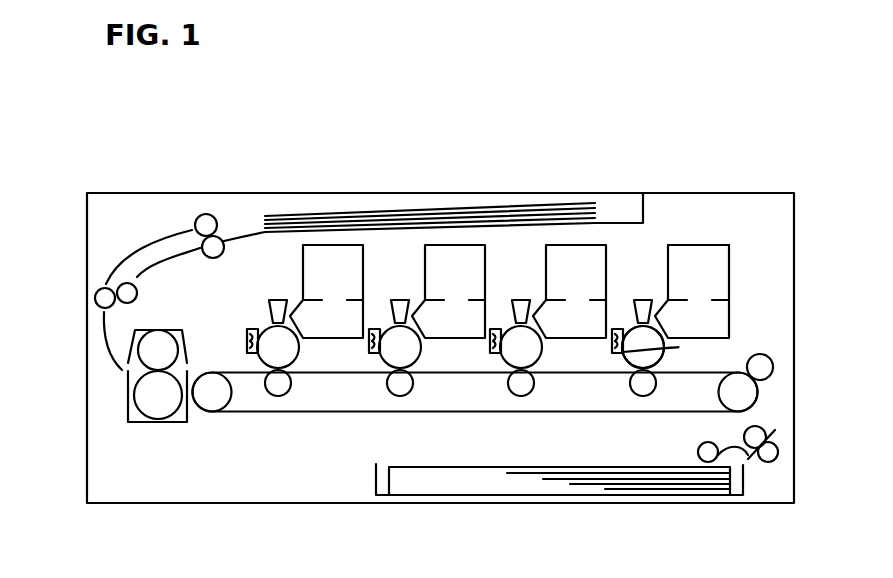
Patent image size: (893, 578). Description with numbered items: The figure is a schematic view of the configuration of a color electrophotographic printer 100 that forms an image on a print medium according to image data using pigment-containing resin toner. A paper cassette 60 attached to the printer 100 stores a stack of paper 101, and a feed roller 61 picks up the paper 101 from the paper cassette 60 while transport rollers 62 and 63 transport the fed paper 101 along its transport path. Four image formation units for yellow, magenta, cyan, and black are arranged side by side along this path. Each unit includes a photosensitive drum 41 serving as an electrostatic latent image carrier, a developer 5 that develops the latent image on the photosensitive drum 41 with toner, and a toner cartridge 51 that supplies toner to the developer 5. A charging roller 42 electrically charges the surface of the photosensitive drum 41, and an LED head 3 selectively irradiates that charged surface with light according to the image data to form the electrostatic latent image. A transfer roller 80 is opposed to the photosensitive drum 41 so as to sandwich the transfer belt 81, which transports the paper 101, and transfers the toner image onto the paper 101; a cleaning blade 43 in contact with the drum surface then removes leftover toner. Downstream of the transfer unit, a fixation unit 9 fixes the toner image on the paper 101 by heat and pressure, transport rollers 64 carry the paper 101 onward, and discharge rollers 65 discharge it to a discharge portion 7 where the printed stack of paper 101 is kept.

The printer 100 is at (767, 193).
The discharge portion 7 is at (402, 216).
The discharge rollers 65 is at (205, 214).
The transport rollers 64 is at (95, 298).
The fixation unit 9 is at (128, 405).
The developer 5 is at (729, 286).
The toner cartridge 51 is at (718, 245).
The LED head 3 is at (643, 300).
The charging roller 42 is at (619, 329).
The photosensitive drum 41 is at (664, 346).
The cleaning blade 43 is at (623, 352).
The transfer belt 81 is at (253, 411).
The transfer roller 80 is at (643, 396).
The transport roller 63 is at (773, 368).
The transport roller 62 is at (779, 452).
The feed roller 61 is at (748, 455).
The paper cassette 60 is at (376, 479).
The paper 101 is at (428, 485).